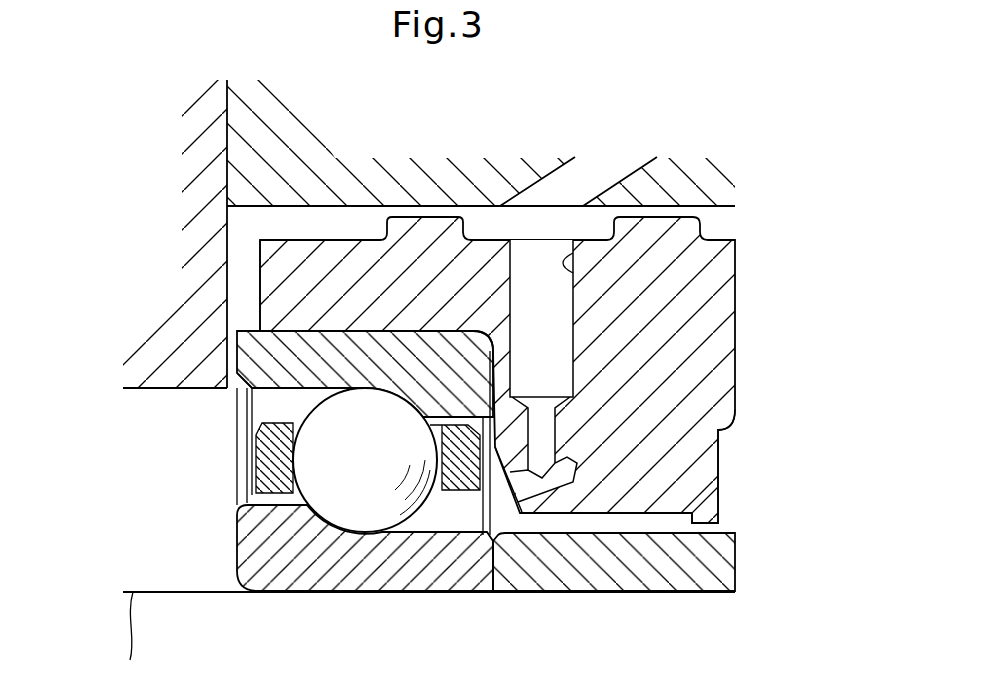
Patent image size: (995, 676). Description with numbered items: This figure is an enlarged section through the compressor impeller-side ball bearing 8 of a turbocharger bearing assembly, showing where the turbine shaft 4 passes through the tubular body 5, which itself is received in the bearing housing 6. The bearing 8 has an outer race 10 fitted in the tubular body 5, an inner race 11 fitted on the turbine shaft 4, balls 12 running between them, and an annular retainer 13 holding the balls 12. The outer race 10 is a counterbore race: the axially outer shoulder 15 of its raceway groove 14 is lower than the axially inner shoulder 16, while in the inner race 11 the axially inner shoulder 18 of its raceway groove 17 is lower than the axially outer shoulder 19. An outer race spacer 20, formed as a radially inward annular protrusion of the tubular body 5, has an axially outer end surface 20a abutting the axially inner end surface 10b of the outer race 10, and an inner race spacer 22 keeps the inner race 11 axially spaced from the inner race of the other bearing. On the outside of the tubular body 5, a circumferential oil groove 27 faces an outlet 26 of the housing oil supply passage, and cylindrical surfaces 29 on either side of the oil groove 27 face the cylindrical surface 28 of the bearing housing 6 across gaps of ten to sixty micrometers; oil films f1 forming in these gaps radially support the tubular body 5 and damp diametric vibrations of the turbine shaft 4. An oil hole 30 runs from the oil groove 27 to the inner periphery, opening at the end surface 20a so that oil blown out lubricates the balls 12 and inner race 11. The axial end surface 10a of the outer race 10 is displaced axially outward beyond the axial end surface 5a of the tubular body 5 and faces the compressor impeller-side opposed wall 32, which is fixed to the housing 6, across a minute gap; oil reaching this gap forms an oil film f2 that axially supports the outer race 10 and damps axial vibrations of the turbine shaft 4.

The turbine shaft 4 is at (130, 620).
The tubular body 5 is at (459, 309).
The axial end surface of the tubular body 5a is at (258, 277).
The bearing housing 6 is at (456, 234).
The compressor impeller-side ball bearing 8 is at (232, 450).
The outer race 10 is at (238, 340).
The axial end surface of the outer race 10a is at (240, 367).
The axially inner end surface of the outer race 10b is at (555, 393).
The inner race 11 is at (240, 550).
The balls 12 is at (318, 470).
The retainer 13 is at (460, 482).
The raceway groove of the outer race 14 is at (367, 398).
The axially outer shoulder of the outer race raceway groove 15 is at (303, 383).
The axially inner shoulder of the outer race raceway groove 16 is at (447, 410).
The raceway groove of the inner race 17 is at (357, 507).
The axially inner shoulder of the inner race raceway groove 18 is at (400, 538).
The axially outer shoulder of the inner race raceway groove 19 is at (283, 512).
The outer race spacer 20 is at (680, 470).
The axially outer end surface of the outer race spacer 20a is at (510, 340).
The inner race spacer 22 is at (700, 565).
The outlet of the oil supply passage 26 is at (550, 200).
The oil groove 27 is at (587, 240).
The cylindrical surface of the bearing housing 28 is at (247, 207).
The cylindrical surface of the tubular body 29 is at (452, 212).
The oil hole 30 is at (575, 262).
The compressor impeller-side opposed wall 32 is at (170, 390).
The oil film f1 is at (427, 214).
The oil film f2 is at (245, 345).